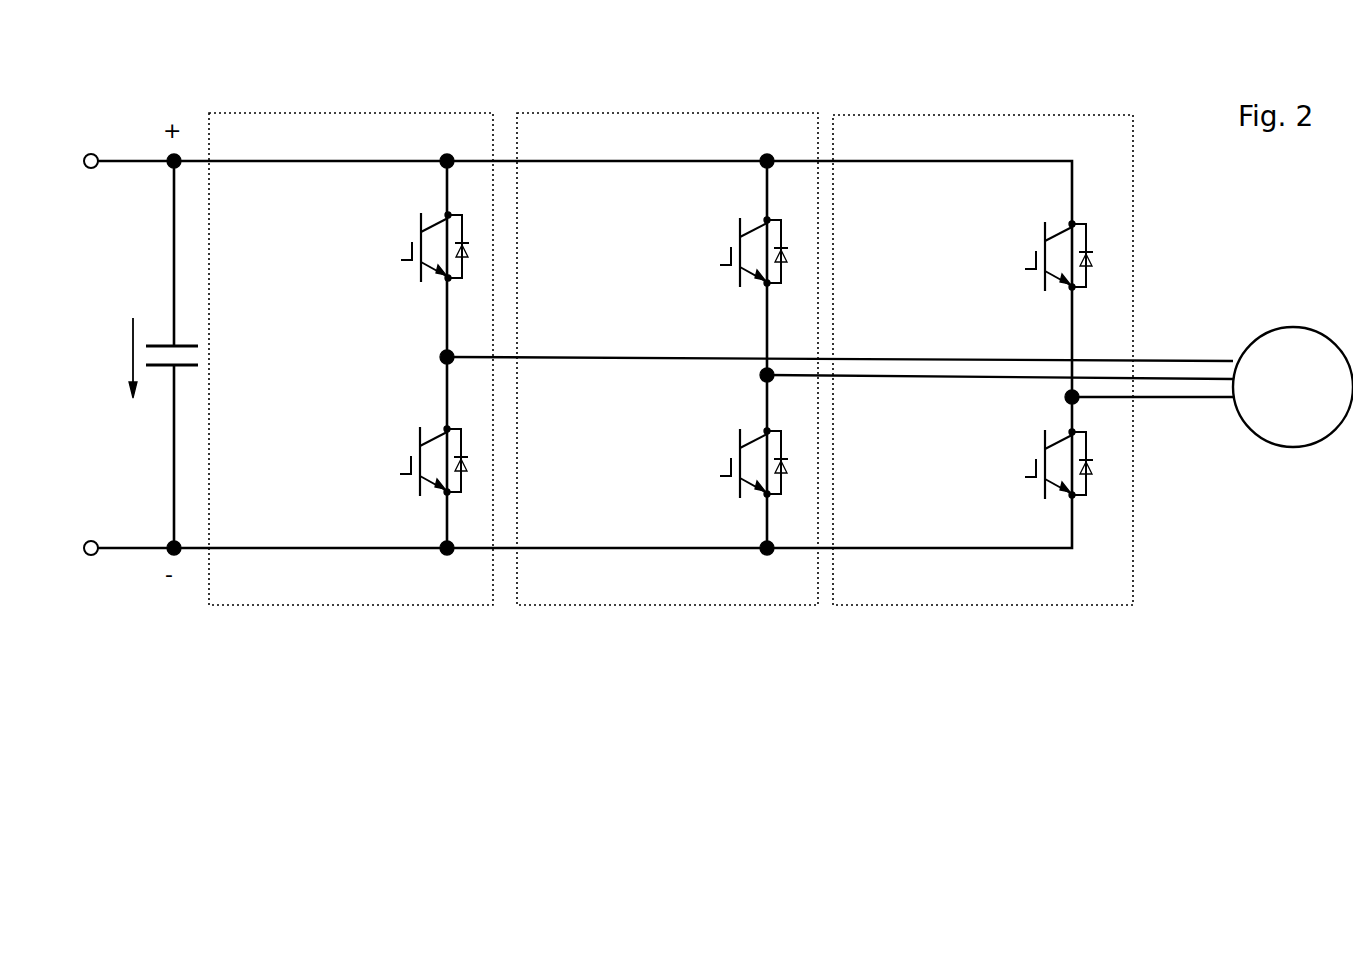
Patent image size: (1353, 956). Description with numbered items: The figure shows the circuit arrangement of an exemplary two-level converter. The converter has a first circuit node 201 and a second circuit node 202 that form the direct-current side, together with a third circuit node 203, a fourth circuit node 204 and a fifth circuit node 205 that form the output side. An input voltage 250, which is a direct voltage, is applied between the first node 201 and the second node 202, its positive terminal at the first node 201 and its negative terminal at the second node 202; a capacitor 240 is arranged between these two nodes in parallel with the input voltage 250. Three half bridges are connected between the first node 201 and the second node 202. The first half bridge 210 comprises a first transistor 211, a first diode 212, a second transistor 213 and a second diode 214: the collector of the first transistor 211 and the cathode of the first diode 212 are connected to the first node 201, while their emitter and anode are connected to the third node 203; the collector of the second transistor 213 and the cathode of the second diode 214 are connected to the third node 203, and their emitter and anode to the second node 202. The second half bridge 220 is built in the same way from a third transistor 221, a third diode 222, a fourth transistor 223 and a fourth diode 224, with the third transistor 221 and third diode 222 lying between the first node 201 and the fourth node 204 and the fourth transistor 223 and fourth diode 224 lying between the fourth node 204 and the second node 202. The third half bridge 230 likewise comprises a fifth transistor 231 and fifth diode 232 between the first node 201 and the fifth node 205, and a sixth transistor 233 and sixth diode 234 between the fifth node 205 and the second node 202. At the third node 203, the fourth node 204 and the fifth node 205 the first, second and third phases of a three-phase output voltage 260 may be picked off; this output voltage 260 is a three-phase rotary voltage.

The first circuit node 201 is at (100, 157).
The second circuit node 202 is at (100, 552).
The third circuit node 203 is at (447, 357).
The fourth circuit node 204 is at (767, 376).
The fifth circuit node 205 is at (1068, 398).
The first half bridge 210 is at (351, 365).
The first transistor 211 is at (421, 273).
The first diode 212 is at (462, 241).
The second transistor 213 is at (419, 473).
The second diode 214 is at (462, 470).
The second half bridge 220 is at (667, 365).
The third transistor 221 is at (737, 263).
The third diode 222 is at (782, 246).
The fourth transistor 223 is at (734, 484).
The fourth diode 224 is at (783, 480).
The third half bridge 230 is at (983, 365).
The fifth transistor 231 is at (1044, 265).
The fifth diode 232 is at (1088, 250).
The sixth transistor 233 is at (1044, 485).
The sixth diode 234 is at (1090, 481).
The capacitor 240 is at (166, 367).
The input voltage 250 is at (133, 355).
The three-phase output voltage 260 is at (1293, 387).